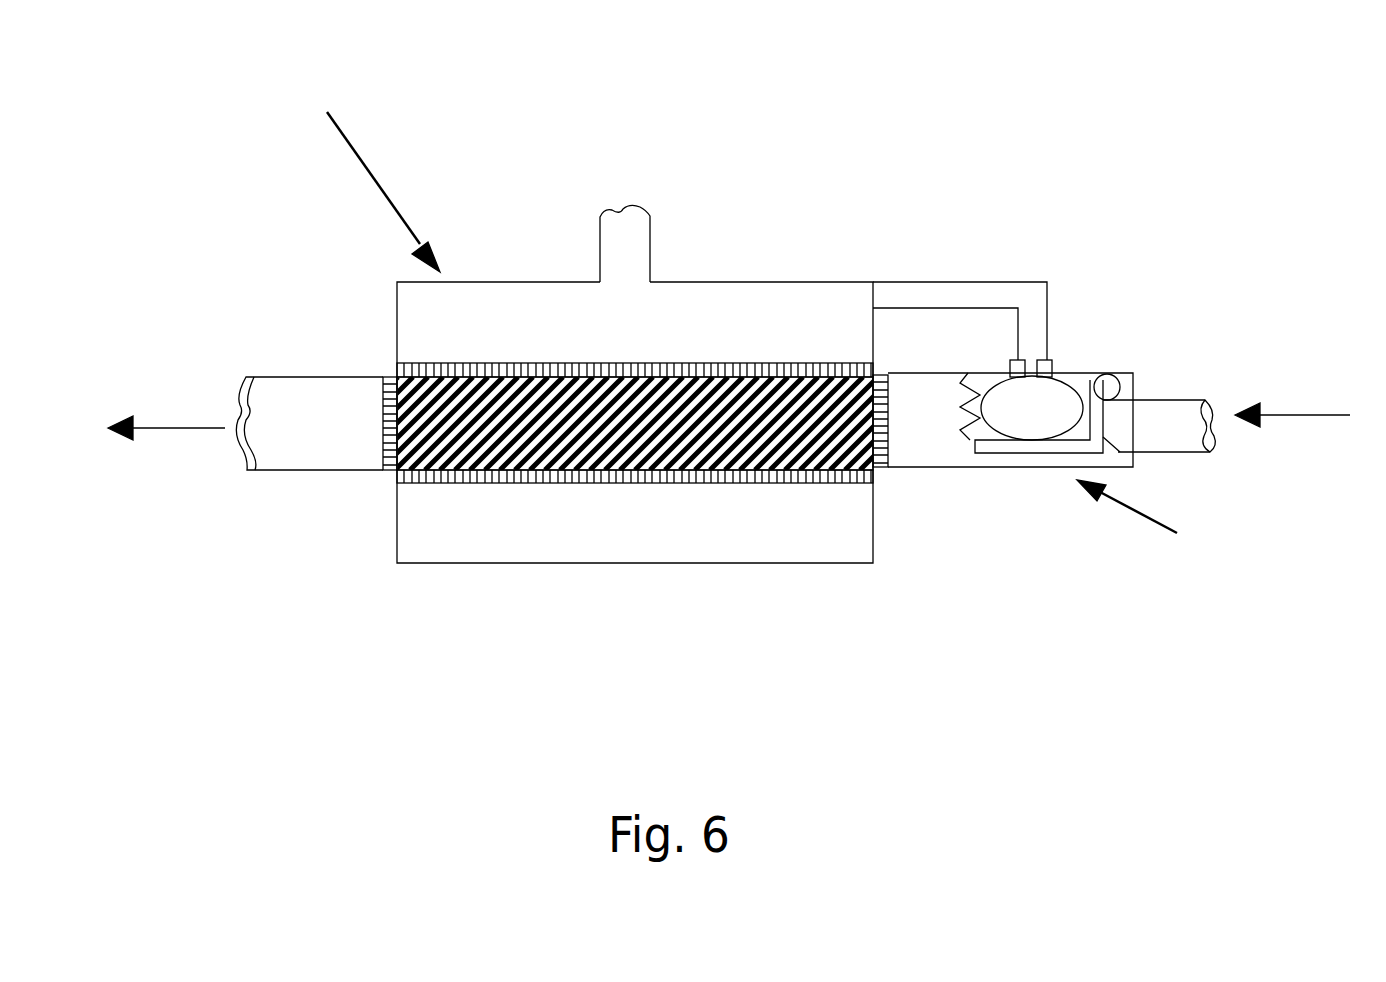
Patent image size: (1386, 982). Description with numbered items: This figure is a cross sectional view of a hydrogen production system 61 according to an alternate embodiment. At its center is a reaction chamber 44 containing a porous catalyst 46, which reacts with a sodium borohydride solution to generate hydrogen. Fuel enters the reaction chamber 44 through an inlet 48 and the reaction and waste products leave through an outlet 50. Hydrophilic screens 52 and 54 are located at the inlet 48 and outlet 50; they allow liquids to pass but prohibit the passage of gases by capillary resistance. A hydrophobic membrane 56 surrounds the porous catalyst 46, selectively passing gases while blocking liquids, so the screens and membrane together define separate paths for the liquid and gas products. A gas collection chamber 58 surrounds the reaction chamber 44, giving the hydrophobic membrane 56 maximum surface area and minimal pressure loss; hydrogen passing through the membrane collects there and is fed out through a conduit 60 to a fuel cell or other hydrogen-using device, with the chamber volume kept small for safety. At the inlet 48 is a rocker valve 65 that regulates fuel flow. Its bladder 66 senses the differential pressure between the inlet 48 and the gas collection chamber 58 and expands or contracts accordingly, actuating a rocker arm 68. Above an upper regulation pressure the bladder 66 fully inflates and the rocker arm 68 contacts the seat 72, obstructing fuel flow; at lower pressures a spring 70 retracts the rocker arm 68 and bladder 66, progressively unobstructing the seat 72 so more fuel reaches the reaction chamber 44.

The reaction chamber 44 is at (803, 375).
The porous catalyst 46 is at (490, 443).
The inlet 48 is at (1162, 425).
The outlet 50 is at (303, 403).
The hydrophilic screen 52 is at (893, 463).
The hydrophilic screen 54 is at (380, 378).
The hydrophobic membrane 56 is at (700, 363).
The gas collection chamber 58 is at (615, 340).
The conduit 60 is at (650, 240).
The hydrogen production system 61 is at (354, 166).
The rocker valve 65 is at (1063, 468).
The bladder 66 is at (1032, 398).
The rocker arm 68 is at (1105, 372).
The spring 70 is at (975, 377).
The seat 72 is at (1103, 433).